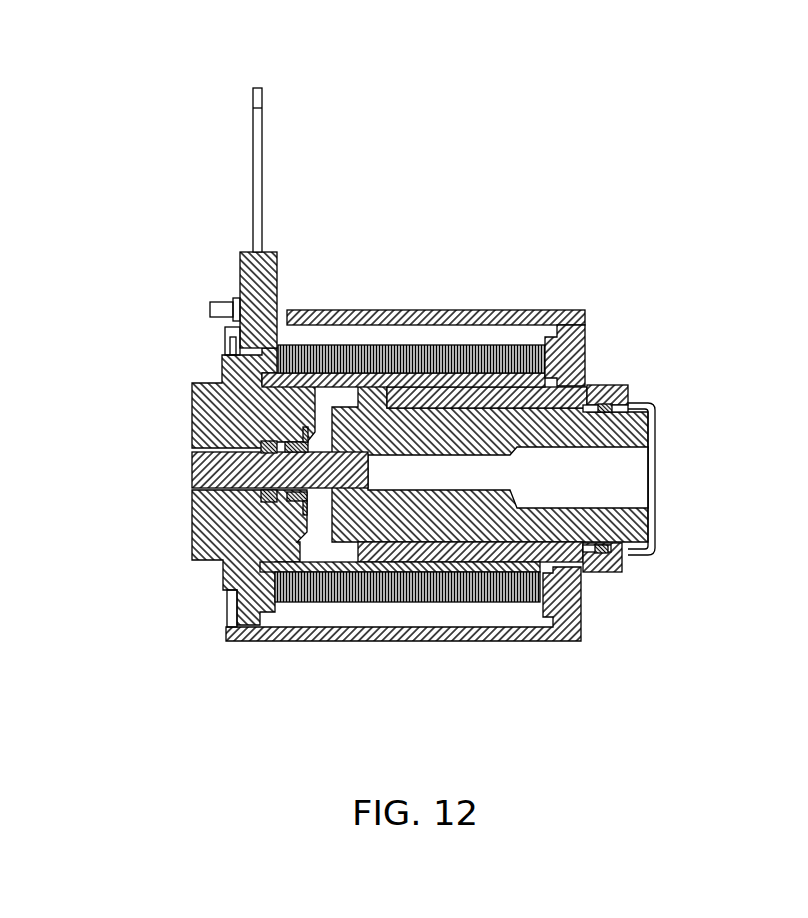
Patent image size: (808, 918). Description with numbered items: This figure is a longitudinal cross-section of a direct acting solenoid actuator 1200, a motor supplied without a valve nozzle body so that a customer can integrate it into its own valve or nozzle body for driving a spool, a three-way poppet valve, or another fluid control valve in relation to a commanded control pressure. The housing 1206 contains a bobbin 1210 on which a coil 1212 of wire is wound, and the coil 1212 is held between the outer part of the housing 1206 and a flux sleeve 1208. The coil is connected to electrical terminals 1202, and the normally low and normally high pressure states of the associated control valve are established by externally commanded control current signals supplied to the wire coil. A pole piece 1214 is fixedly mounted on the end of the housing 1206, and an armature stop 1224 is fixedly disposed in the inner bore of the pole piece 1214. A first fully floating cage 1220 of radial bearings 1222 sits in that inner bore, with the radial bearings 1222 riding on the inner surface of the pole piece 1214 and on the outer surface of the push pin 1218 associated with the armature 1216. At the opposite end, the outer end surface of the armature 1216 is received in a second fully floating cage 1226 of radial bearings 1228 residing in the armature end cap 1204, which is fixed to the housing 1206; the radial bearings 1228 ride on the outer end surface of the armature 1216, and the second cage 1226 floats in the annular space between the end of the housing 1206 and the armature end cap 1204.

The direct acting solenoid actuator 1200 is at (548, 156).
The electrical terminals 1202 is at (253, 157).
The armature end cap 1204 is at (635, 403).
The housing 1206 is at (510, 311).
The flux sleeve 1208 is at (567, 310).
The bobbin 1210 is at (240, 290).
The coil 1212 is at (470, 607).
The pole piece 1214 is at (287, 385).
The armature 1216 is at (338, 540).
The push pin 1218 is at (322, 410).
The first fully floating cage 1220 is at (258, 500).
The radial bearings 1222 is at (258, 445).
The armature stop 1224 is at (323, 470).
The second fully floating cage 1226 is at (628, 552).
The radial bearings 1228 is at (626, 562).